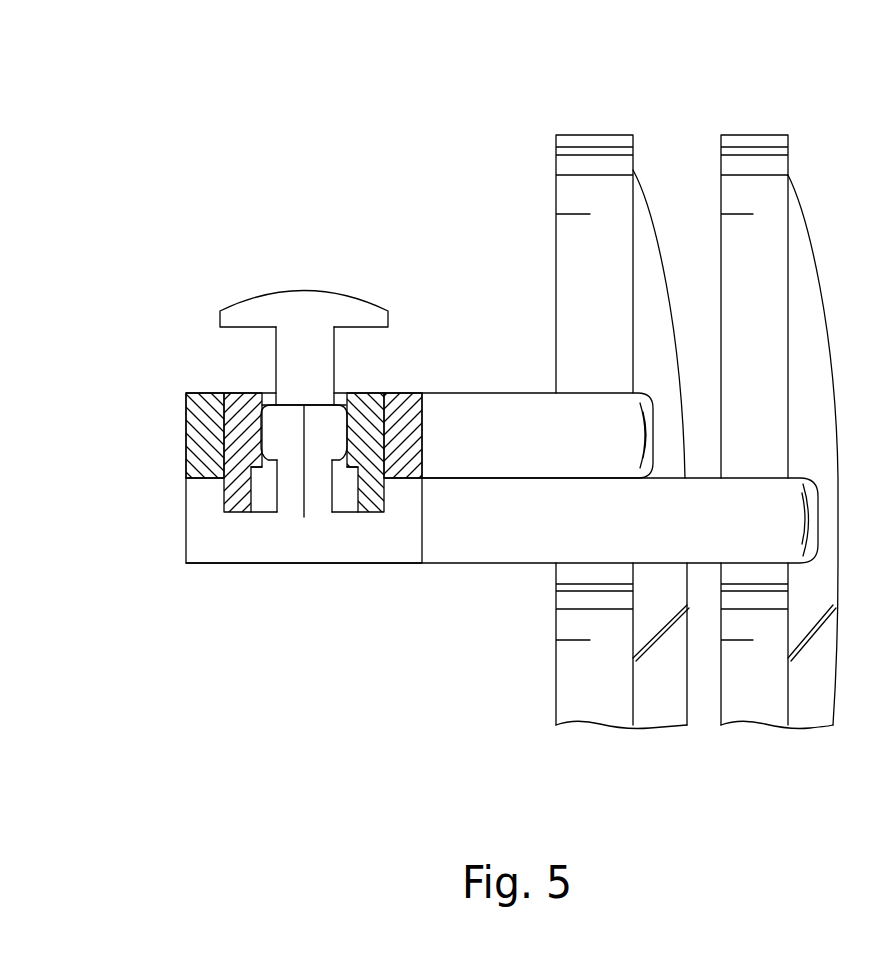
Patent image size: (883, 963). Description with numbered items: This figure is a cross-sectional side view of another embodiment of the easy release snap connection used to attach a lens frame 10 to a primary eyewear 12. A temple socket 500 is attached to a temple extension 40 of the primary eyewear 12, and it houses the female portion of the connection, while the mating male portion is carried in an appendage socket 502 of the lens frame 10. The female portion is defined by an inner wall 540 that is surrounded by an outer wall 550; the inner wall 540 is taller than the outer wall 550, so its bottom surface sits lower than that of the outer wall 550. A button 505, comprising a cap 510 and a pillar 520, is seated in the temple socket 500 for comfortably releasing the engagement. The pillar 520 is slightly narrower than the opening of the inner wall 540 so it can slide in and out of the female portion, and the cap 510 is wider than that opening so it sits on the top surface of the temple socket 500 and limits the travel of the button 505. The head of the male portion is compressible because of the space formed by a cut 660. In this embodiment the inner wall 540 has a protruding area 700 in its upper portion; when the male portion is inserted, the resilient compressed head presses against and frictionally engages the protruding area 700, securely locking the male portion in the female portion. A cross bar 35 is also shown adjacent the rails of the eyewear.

The lens frame 10 is at (748, 135).
The primary eyewear 12 is at (583, 135).
The lower cross bar 35 is at (505, 563).
The temple extension 40 is at (532, 407).
The temple socket 500 is at (182, 427).
The appendage socket 502 is at (184, 547).
The button 505 is at (246, 447).
The cap 510 is at (287, 305).
The pillar 520 is at (298, 365).
The inner wall 540 is at (370, 397).
The outer wall 550 is at (415, 400).
The cut 660 is at (303, 493).
The protruding area 700 is at (342, 467).